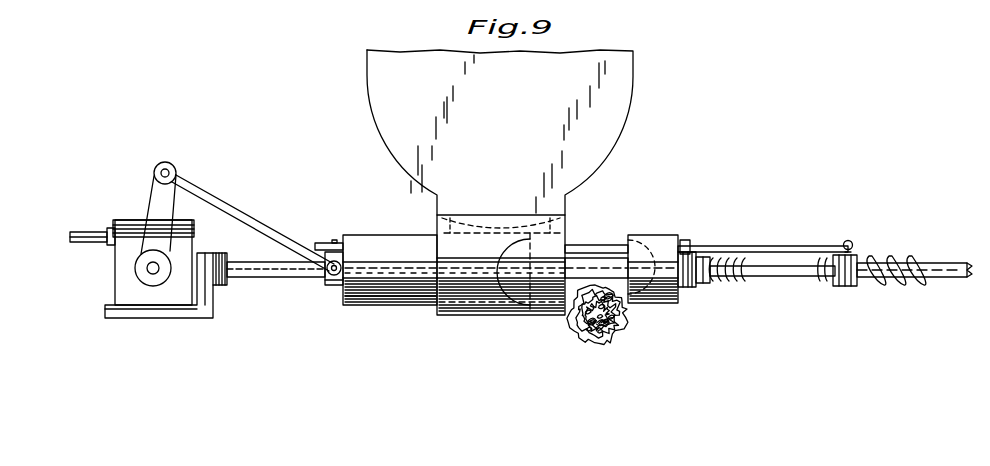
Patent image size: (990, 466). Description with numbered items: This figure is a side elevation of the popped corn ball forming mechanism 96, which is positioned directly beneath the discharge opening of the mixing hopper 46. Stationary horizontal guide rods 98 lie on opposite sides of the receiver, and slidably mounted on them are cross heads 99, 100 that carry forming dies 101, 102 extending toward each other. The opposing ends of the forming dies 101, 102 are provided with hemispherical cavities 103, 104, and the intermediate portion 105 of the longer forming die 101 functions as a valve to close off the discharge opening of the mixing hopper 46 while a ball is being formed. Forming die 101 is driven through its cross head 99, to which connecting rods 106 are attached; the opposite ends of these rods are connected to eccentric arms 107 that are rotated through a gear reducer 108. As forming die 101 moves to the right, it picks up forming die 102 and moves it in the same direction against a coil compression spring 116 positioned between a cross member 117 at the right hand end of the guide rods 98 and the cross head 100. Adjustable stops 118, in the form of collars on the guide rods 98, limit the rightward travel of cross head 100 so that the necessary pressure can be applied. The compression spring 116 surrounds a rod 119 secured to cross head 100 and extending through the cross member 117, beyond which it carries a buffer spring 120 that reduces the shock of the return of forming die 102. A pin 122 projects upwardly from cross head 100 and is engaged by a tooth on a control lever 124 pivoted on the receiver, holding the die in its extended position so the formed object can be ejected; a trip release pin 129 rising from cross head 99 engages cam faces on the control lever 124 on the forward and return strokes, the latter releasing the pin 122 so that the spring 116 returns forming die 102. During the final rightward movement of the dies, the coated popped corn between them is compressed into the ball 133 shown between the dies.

The mixing hopper 46 is at (622, 68).
The popped corn ball forming mechanism 96 is at (759, 153).
The guide rods 98 is at (782, 277).
The cross head 99 is at (333, 285).
The cross head 100 is at (689, 290).
The forming die 101 is at (360, 298).
The forming die 102 is at (663, 238).
The hemispherical cavity 103 is at (518, 294).
The hemispherical cavity 104 is at (643, 303).
The intermediate portion 105 is at (428, 297).
The connecting rods 106 is at (227, 204).
The eccentric arms 107 is at (162, 199).
The gear reducer 108 is at (121, 270).
The coil compression spring 116 is at (723, 262).
The cross member 117 is at (843, 288).
The adjustable stops 118 is at (708, 282).
The rod 119 is at (960, 279).
The buffer spring 120 is at (897, 258).
The pin 122 is at (690, 246).
The control lever 124 is at (792, 239).
The trip release pin 129 is at (333, 240).
The ball 133 is at (598, 338).